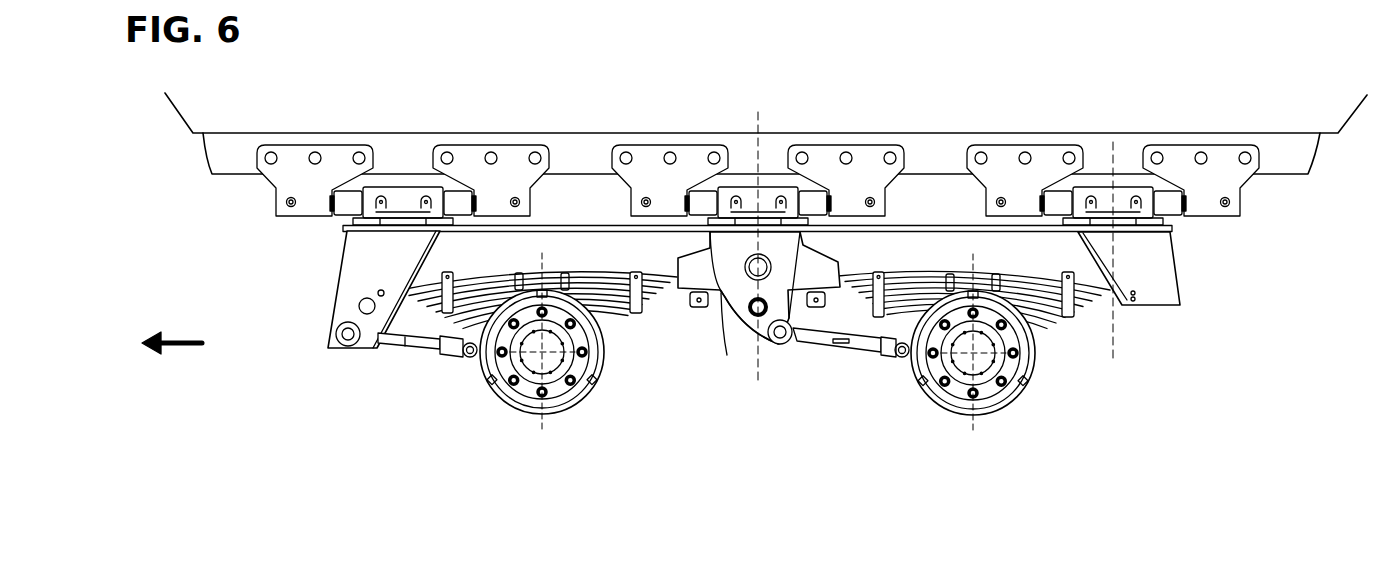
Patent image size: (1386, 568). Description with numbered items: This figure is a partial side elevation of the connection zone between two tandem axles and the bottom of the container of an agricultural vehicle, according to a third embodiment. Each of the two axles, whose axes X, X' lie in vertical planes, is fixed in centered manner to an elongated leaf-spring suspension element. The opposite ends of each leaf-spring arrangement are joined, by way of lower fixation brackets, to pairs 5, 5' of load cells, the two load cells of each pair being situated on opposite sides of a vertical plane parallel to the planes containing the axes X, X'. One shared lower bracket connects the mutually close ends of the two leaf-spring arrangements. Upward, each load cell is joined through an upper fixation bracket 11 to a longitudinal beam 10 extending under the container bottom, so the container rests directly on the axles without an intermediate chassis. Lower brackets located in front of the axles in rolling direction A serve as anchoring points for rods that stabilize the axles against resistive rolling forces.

The pair of load cells 5 is at (758, 112).
The pair of load cells 5' is at (1113, 129).
The longitudinal beam 10 is at (203, 157).
The second fixation bracket 11 is at (446, 152).
The axis of axle X is at (514, 397).
The axis of axle X' is at (945, 404).
The rolling direction A is at (185, 344).